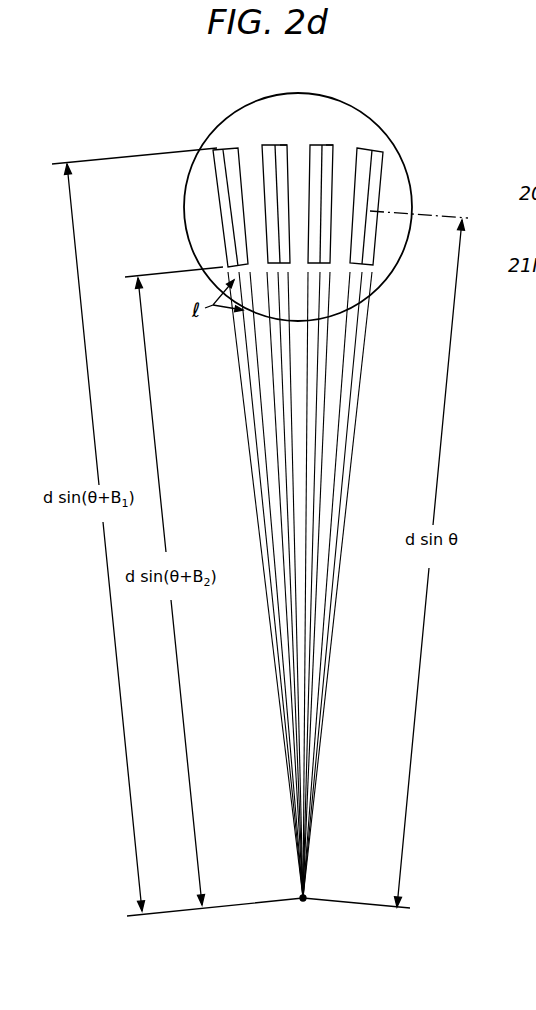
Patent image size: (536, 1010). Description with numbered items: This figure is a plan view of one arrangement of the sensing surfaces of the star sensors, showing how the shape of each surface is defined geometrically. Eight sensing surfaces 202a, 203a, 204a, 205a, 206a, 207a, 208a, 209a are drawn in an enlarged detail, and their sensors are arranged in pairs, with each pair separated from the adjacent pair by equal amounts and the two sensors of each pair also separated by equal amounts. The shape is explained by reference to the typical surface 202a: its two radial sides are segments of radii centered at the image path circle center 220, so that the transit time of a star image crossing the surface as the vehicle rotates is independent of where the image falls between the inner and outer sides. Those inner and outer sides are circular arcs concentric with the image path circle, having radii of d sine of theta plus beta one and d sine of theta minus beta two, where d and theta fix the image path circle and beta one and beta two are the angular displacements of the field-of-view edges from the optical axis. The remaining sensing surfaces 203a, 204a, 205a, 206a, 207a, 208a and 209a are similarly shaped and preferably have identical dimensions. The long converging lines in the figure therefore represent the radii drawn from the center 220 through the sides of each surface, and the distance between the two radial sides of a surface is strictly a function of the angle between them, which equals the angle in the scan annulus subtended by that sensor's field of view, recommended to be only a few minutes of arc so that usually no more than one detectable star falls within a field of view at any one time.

The sensing surface 202a is at (211, 134).
The sensing surface 203a is at (227, 148).
The sensing surface 204a is at (266, 144).
The sensing surface 205a is at (285, 144).
The sensing surface 206a is at (322, 144).
The sensing surface 207a is at (333, 144).
The sensing surface 208a is at (372, 148).
The sensing surface 209a is at (377, 187).
The image path circle center 220 is at (303, 900).